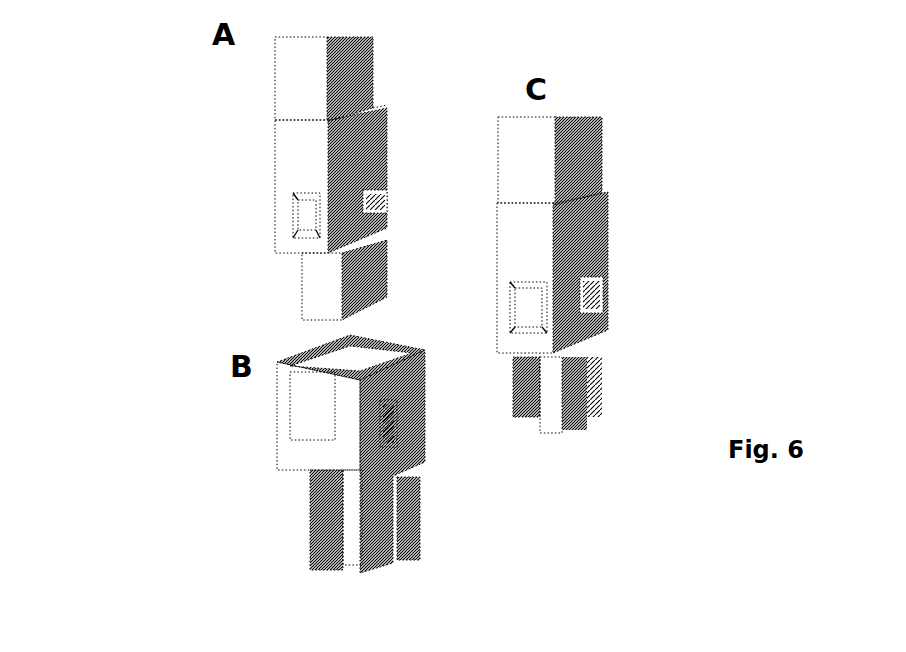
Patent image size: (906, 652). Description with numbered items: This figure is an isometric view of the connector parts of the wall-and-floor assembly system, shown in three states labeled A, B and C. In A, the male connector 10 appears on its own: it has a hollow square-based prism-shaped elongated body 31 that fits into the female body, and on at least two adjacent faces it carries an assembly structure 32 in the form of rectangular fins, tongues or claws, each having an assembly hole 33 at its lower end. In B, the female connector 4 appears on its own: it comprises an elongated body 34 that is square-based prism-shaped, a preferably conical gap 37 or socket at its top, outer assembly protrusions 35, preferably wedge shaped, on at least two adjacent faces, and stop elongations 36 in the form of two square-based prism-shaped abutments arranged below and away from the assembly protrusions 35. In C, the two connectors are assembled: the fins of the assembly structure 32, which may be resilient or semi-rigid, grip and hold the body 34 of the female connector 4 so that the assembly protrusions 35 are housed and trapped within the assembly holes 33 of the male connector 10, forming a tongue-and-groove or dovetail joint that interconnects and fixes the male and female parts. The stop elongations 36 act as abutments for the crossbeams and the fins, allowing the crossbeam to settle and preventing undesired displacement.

The male connector 10 is at (397, 236).
The elongated body 31 is at (300, 77).
The assembly structure 32 is at (300, 166).
The assembly hole 33 is at (310, 218).
The female connector 4 is at (320, 430).
The elongated body 34 is at (313, 463).
The assembly protrusion 35 is at (592, 310).
The stop elongation 36 is at (325, 523).
The gap 37 is at (340, 362).